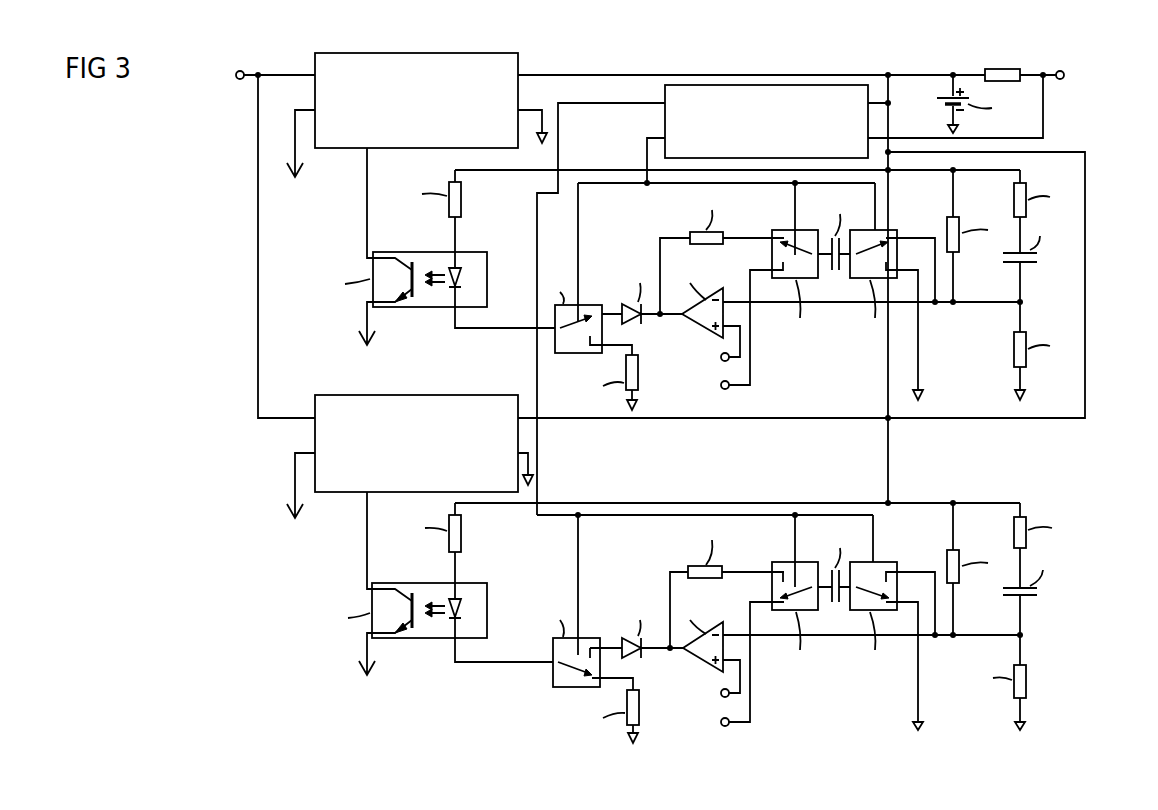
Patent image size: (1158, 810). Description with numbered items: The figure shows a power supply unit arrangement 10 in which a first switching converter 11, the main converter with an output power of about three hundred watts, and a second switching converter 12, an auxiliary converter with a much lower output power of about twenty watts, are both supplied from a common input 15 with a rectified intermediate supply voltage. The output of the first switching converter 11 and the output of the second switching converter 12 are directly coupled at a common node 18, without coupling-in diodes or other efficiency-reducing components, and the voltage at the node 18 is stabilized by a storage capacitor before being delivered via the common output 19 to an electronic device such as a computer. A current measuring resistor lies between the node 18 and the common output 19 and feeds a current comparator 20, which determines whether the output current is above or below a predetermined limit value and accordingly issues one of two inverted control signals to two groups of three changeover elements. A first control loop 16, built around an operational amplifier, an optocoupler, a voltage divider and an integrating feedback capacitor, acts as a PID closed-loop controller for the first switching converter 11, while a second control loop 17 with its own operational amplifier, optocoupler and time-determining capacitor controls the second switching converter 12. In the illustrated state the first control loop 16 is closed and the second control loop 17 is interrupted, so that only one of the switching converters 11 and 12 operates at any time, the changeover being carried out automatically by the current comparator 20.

The power supply unit arrangement 10 is at (282, 664).
The first switching converter 11 is at (520, 62).
The second switching converter 12 is at (418, 394).
The input 15 is at (240, 82).
The first control loop 16 is at (1058, 453).
The second control loop 17 is at (1051, 701).
The node 18 is at (892, 77).
The common output 19 is at (1061, 82).
The current comparator 20 is at (663, 122).